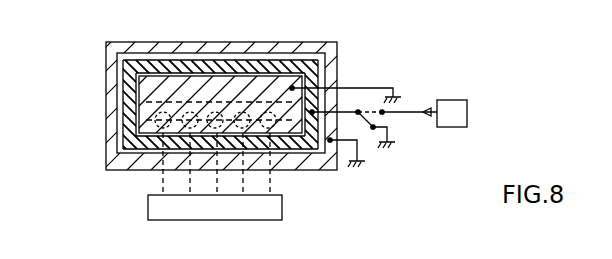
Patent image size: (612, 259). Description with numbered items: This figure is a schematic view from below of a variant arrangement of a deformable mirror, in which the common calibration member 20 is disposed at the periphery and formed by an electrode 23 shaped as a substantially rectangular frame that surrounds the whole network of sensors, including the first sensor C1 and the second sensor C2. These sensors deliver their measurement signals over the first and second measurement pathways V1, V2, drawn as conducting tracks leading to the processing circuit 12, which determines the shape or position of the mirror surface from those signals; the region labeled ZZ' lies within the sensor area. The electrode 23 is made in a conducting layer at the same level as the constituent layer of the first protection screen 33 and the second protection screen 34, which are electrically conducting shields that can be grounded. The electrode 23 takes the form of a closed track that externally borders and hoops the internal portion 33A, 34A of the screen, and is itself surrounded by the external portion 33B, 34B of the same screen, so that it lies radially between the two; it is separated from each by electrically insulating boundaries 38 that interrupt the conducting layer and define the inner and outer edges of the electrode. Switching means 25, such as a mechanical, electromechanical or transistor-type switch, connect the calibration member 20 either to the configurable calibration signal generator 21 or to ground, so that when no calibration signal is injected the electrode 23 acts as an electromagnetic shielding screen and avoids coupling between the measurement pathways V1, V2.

The common calibration member 20 is at (294, 150).
The electrically insulating boundaries 38 is at (331, 160).
The second protection screen 34 is at (224, 79).
The first protection screen 33 is at (263, 84).
The internal portion of the second screen 34A is at (88, 104).
The internal portion of the first screen 33A is at (137, 86).
The external portion of the second screen 34B is at (358, 79).
The external portion of the first screen 33B is at (330, 52).
The electrode 23 is at (311, 77).
The measurement zone ZZ' is at (245, 71).
The first sensor C1 is at (135, 121).
The second sensor C2 is at (121, 97).
The first measurement pathway V1 is at (163, 178).
The second measurement pathway V2 is at (190, 182).
The processing circuit 12 is at (208, 215).
The switching means 25 is at (393, 119).
The generator 21 is at (445, 121).